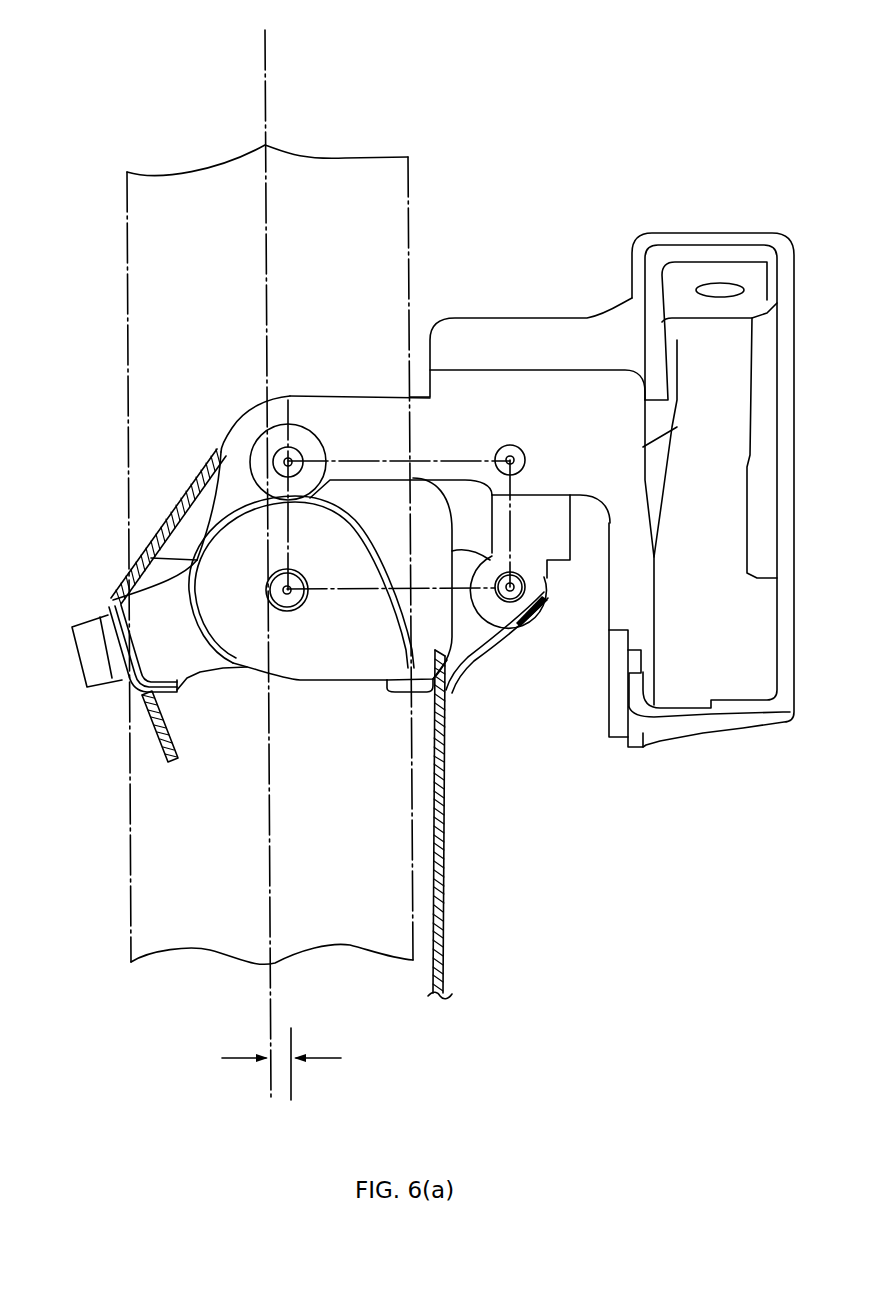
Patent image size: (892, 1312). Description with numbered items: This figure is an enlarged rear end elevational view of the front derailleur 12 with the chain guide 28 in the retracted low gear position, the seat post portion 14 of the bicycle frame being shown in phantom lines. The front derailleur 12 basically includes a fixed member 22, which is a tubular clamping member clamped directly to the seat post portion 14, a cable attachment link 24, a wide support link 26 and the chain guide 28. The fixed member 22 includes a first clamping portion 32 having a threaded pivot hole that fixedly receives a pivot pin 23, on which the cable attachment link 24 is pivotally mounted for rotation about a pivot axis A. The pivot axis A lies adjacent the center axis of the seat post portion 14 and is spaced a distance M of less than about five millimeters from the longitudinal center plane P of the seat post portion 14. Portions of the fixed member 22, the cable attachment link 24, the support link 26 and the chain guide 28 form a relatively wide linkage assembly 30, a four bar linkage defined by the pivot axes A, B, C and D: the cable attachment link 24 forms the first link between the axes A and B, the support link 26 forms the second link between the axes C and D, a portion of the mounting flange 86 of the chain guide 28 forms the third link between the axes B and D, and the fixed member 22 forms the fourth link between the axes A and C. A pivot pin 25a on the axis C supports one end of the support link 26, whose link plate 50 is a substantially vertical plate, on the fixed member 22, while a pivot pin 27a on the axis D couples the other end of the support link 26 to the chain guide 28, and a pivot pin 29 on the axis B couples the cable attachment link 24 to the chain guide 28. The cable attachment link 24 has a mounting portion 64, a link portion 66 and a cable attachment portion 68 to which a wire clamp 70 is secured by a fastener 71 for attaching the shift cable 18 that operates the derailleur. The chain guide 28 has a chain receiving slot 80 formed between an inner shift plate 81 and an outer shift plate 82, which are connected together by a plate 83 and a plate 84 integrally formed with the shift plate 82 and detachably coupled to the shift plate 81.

The front derailleur 12 is at (630, 160).
The seat post portion 14 is at (410, 195).
The shift cable 18 is at (445, 905).
The fixed member 22 is at (467, 696).
The pivot pin 23 is at (257, 608).
The cable attachment link 24 is at (311, 690).
The pivot pin 25a is at (526, 566).
The support link 26 is at (489, 636).
The pivot pin 27a is at (510, 445).
The chain guide 28 is at (714, 218).
The pivot pin 29 is at (308, 397).
The linkage assembly 30 is at (525, 668).
The first clamping portion 32 is at (386, 712).
The link plate 50 is at (555, 540).
The mounting portion 64 is at (290, 665).
The link portion 66 is at (232, 436).
The cable attachment portion 68 is at (185, 658).
The wire clamp 70 is at (118, 692).
The fastener 71 is at (100, 690).
The chain receiving slot 80 is at (703, 670).
The shift plate 81 is at (619, 733).
The shift plate 82 is at (782, 595).
The plate 83 is at (673, 238).
The plate 84 is at (736, 727).
The mounting flange 86 is at (383, 415).
The longitudinal center plane P is at (265, 42).
The distance M is at (341, 1058).
The pivot axis A is at (300, 609).
The pivot axis B is at (285, 449).
The pivot axis C is at (520, 605).
The pivot axis D is at (516, 449).